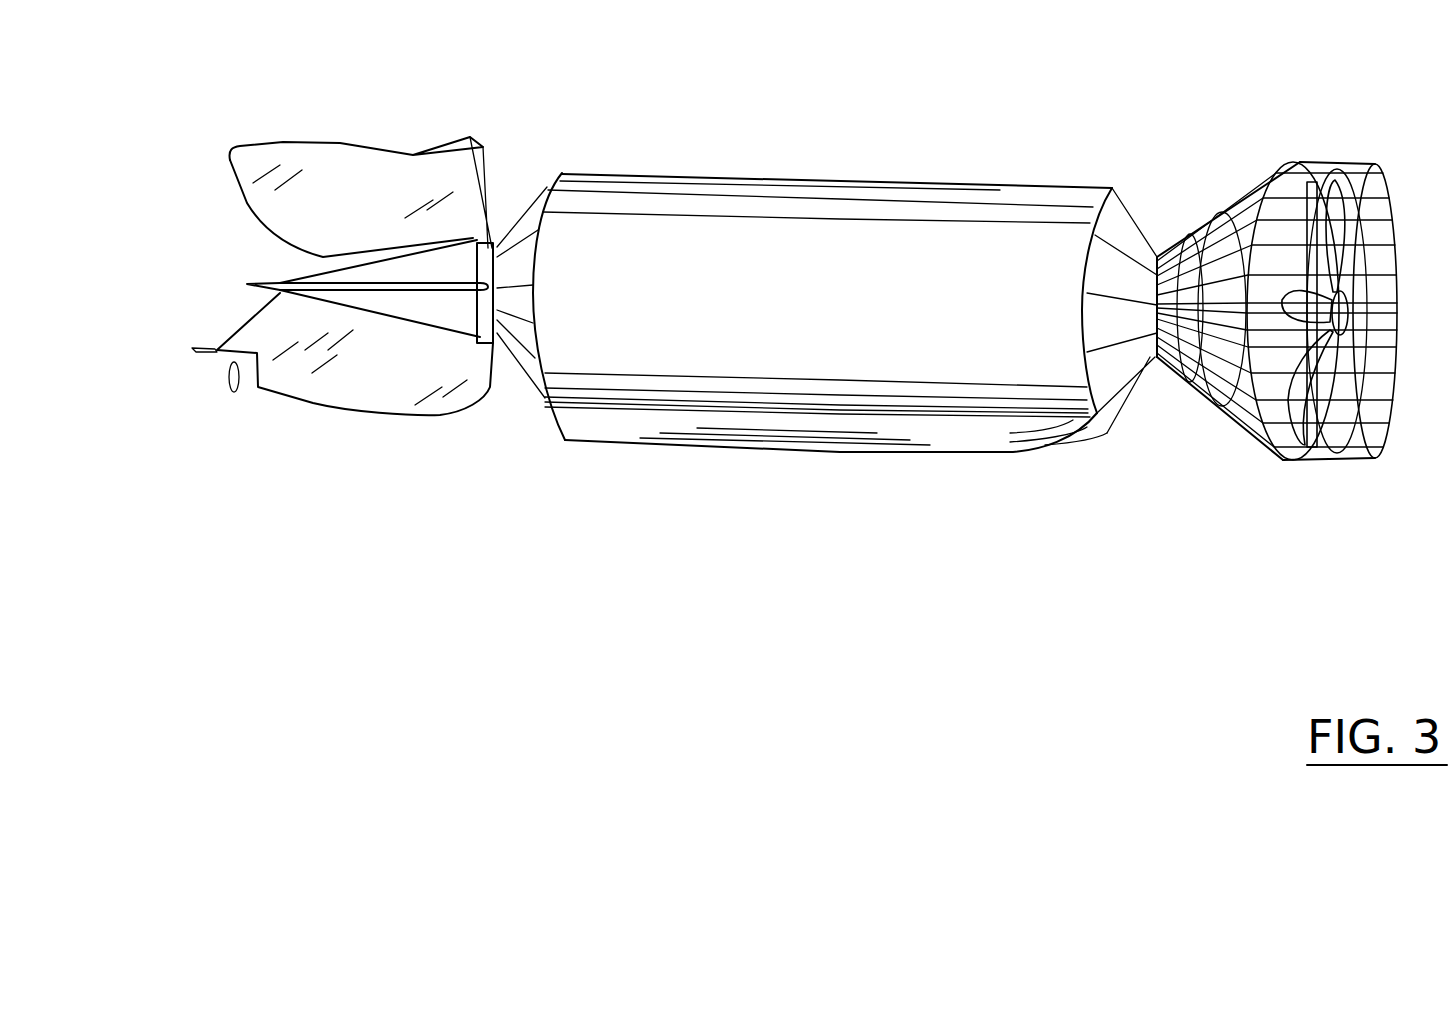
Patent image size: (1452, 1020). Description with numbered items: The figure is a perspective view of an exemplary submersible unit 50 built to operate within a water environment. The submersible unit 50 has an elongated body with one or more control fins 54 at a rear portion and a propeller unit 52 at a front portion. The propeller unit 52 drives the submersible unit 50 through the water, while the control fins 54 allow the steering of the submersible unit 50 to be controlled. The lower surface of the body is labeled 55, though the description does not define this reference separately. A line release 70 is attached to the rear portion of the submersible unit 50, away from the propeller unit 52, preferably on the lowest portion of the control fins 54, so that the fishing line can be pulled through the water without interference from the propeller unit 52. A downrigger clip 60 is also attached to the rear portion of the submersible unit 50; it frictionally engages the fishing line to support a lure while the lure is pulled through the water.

The submersible unit 50 is at (847, 197).
The propeller unit 52 is at (1293, 290).
The control fins 54 is at (380, 283).
The bottom surface of body 55 is at (950, 442).
The downrigger clip 60 is at (192, 348).
The line release 70 is at (234, 392).